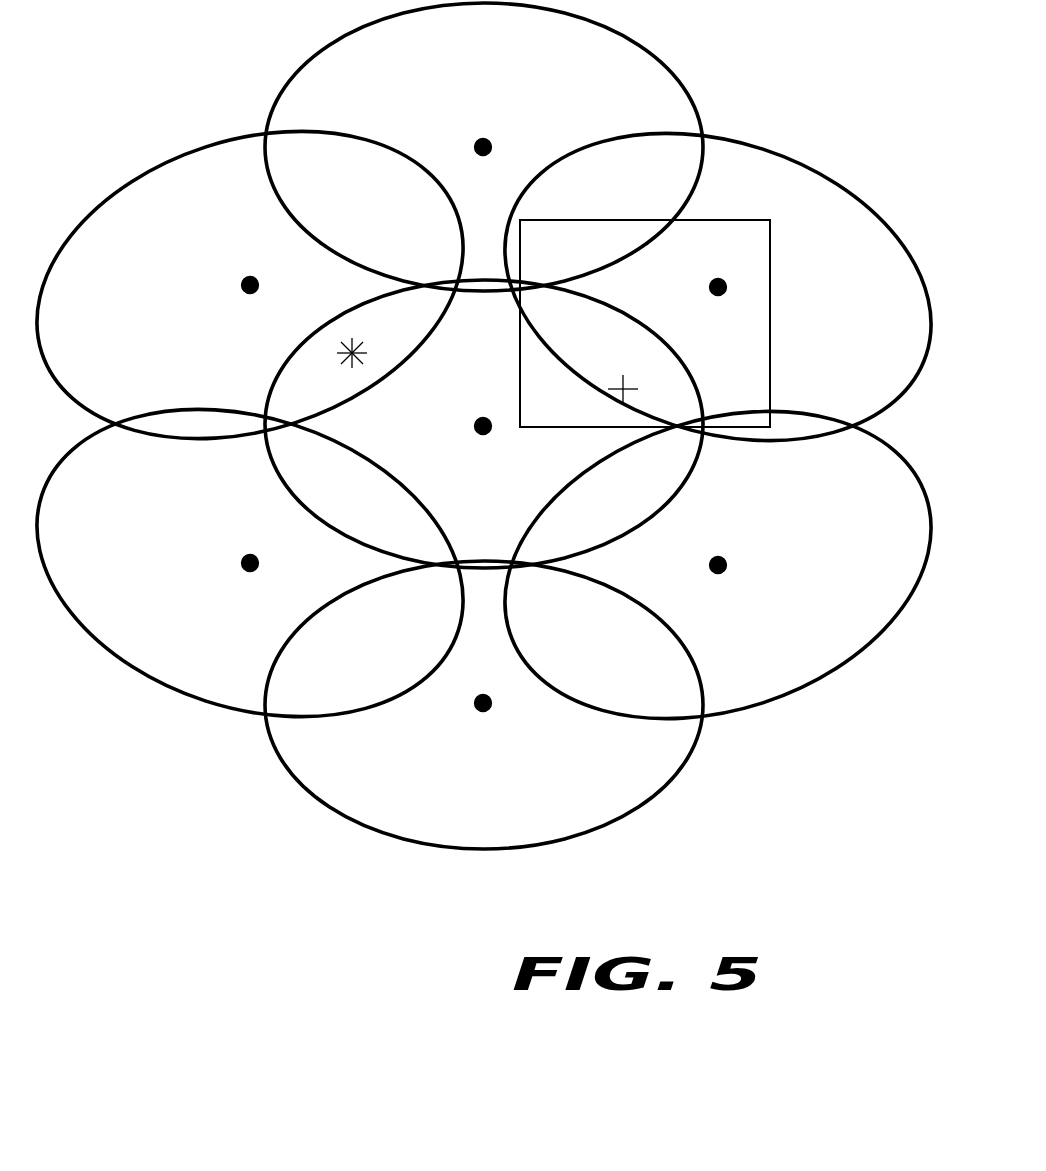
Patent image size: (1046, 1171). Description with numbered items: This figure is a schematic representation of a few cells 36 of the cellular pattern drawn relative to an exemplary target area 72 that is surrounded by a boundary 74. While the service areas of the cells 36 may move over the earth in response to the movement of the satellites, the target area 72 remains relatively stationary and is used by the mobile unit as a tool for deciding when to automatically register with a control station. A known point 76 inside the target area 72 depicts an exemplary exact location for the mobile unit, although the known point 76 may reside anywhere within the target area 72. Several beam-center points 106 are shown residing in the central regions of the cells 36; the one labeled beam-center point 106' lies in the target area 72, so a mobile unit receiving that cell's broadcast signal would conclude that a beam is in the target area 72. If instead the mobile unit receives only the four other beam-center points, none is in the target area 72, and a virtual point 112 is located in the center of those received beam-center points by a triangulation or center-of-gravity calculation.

The cells 36 is at (647, 48).
The beam-center points 106 is at (629, 660).
The beam-center point 106' is at (686, 307).
The target area 72 is at (760, 365).
The boundary 74 is at (735, 218).
The known point 76 is at (615, 380).
The virtual point 112 is at (340, 362).